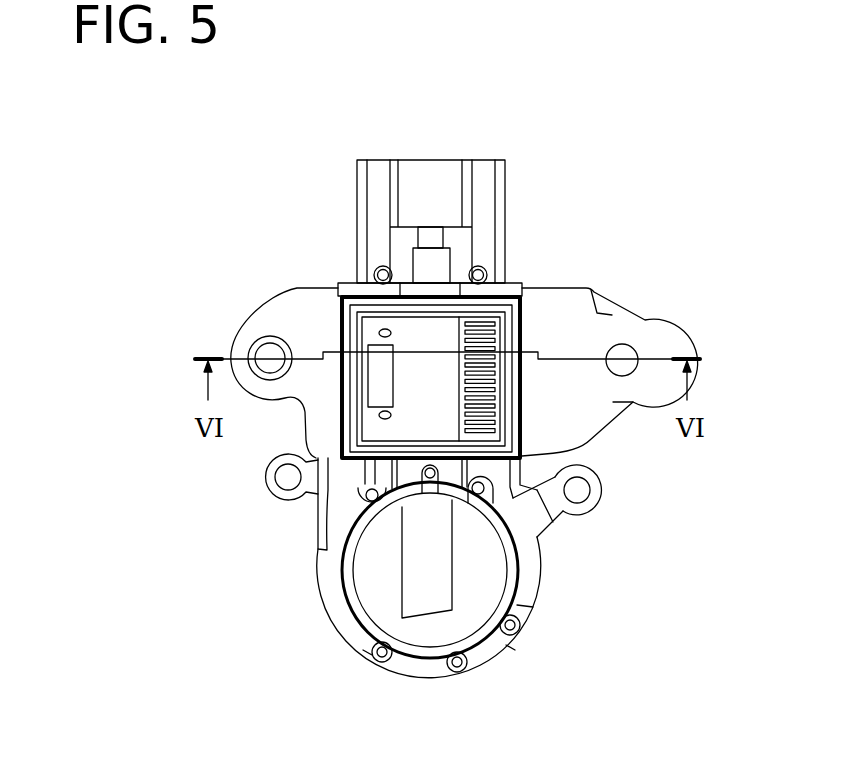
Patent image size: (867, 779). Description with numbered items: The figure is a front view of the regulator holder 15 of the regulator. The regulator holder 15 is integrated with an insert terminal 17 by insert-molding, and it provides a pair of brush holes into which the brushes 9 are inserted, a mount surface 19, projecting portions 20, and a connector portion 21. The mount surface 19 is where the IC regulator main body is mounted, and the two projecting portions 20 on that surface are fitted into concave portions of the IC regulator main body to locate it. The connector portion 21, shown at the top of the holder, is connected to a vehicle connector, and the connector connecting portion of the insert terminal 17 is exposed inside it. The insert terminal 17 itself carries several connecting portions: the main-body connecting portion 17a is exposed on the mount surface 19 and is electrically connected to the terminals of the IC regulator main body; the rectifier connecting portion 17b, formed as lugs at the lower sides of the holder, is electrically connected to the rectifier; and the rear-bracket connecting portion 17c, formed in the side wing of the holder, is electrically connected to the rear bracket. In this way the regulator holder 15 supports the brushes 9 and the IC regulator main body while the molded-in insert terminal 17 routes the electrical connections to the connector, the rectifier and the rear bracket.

The brushes 9 is at (427, 595).
The regulator holder 15 is at (318, 248).
The insert terminal 17 is at (643, 313).
The main-body connecting portion 17a is at (482, 398).
The rectifier connecting portion 17b is at (270, 498).
The rear-bracket connecting portion 17c is at (648, 332).
The mount surface 19 is at (407, 423).
The projecting portions 20 is at (379, 331).
The connector portion 21 is at (505, 203).